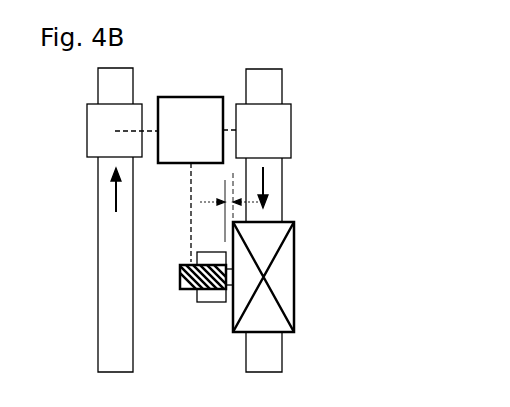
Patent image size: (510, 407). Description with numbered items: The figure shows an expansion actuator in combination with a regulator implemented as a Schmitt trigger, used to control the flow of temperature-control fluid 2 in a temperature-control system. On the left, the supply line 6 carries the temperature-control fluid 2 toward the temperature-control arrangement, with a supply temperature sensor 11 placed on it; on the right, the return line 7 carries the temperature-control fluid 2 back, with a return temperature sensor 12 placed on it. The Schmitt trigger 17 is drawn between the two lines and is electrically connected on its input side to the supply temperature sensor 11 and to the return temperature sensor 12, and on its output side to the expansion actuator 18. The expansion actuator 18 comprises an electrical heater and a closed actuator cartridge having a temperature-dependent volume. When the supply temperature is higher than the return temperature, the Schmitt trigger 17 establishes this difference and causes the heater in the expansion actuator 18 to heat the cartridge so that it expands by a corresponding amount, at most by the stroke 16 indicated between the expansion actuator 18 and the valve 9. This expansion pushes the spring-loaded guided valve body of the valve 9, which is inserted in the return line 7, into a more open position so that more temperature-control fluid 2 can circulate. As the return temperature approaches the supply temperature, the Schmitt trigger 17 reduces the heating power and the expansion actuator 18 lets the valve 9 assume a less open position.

The temperature-control fluid 2 is at (113, 198).
The supply line 6 is at (98, 339).
The return line 7 is at (282, 346).
The valve 9 is at (295, 285).
The supply temperature sensor 11 is at (110, 147).
The return temperature sensor 12 is at (270, 142).
The stroke 16 is at (226, 206).
The Schmitt trigger 17 is at (177, 146).
The expansion actuator 18 is at (202, 293).